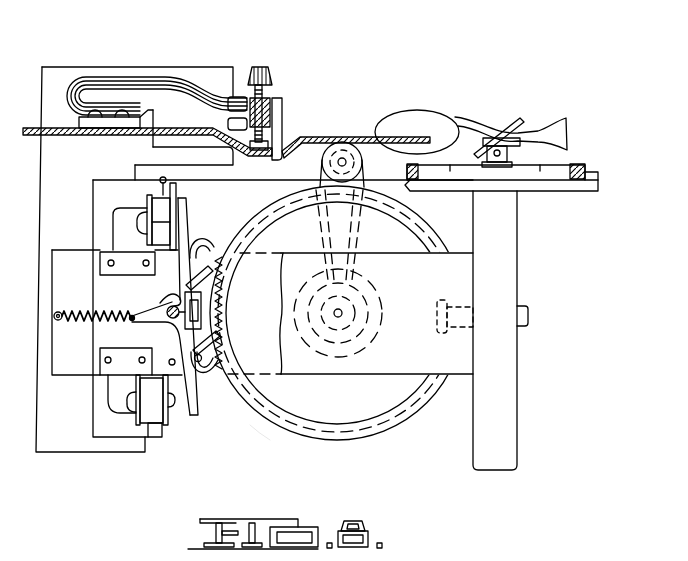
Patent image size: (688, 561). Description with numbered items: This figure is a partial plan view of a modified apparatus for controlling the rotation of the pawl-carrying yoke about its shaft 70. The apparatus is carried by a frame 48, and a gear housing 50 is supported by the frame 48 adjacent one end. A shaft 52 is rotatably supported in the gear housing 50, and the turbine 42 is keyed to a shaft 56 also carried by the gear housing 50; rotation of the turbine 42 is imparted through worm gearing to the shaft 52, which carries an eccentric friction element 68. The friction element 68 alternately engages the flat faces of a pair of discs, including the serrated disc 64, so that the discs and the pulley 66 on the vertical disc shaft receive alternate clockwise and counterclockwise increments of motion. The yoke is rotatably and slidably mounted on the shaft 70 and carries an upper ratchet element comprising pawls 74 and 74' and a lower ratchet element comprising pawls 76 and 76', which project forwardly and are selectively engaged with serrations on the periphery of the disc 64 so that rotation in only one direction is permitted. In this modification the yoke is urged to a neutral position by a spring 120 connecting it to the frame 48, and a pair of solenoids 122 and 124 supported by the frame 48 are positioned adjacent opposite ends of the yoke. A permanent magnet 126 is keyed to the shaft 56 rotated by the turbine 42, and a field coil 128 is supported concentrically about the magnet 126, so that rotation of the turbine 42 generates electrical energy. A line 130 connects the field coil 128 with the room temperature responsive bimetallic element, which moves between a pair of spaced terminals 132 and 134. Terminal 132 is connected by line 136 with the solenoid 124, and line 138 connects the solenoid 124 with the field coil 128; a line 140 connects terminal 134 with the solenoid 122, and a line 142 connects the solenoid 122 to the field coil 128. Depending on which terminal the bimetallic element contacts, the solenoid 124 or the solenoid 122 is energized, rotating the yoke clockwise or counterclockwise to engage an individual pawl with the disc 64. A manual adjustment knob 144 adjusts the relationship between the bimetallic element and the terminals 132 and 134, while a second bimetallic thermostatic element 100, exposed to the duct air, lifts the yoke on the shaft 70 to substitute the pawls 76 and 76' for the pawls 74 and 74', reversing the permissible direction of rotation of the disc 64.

The line 136 is at (138, 67).
The terminal 132 is at (228, 102).
The terminal 134 is at (228, 123).
The manual adjustment knob 144 is at (272, 76).
The turbine 42 is at (432, 115).
The line 140 is at (137, 165).
The line 142 is at (166, 182).
The solenoid 122 is at (160, 217).
The pawl 74' is at (210, 241).
The frame 48 is at (73, 253).
The line 130 is at (392, 176).
The shaft 56 is at (482, 162).
The permanent magnet 126 is at (553, 170).
The field coil 128 is at (578, 173).
The gear housing 50 is at (518, 272).
The shaft 52 is at (529, 318).
The eccentric friction element 68 is at (437, 323).
The pulley 66 is at (362, 345).
The spring 120 is at (82, 314).
The shaft 70 is at (150, 300).
The pawl 76' is at (221, 310).
The second bimetallic thermostatic element 100 is at (202, 311).
The pawl 76 is at (234, 313).
The pawl 74 is at (224, 360).
The solenoid 124 is at (165, 420).
The line 138 is at (93, 412).
The second disc 64 is at (272, 427).